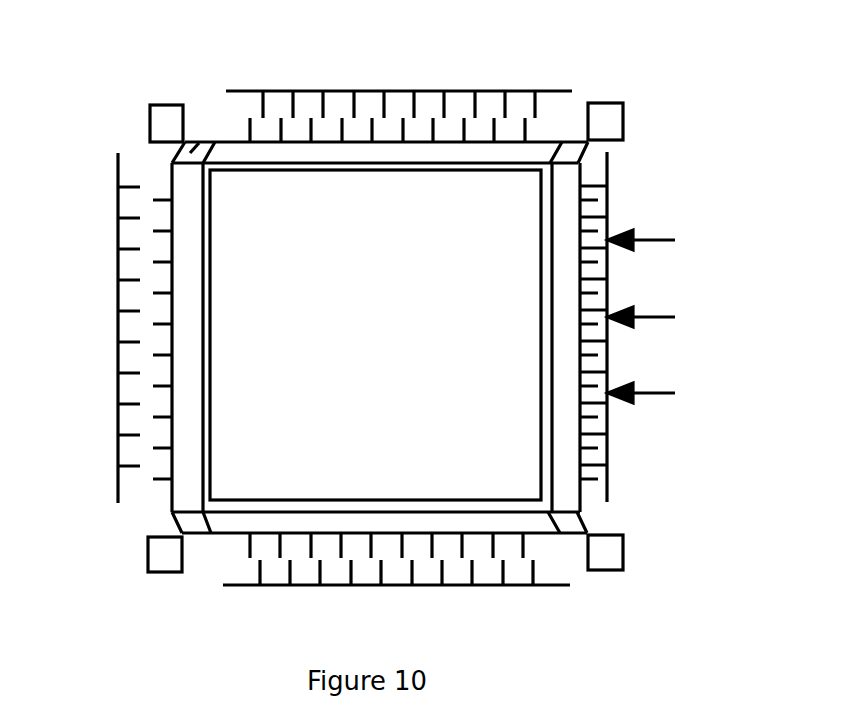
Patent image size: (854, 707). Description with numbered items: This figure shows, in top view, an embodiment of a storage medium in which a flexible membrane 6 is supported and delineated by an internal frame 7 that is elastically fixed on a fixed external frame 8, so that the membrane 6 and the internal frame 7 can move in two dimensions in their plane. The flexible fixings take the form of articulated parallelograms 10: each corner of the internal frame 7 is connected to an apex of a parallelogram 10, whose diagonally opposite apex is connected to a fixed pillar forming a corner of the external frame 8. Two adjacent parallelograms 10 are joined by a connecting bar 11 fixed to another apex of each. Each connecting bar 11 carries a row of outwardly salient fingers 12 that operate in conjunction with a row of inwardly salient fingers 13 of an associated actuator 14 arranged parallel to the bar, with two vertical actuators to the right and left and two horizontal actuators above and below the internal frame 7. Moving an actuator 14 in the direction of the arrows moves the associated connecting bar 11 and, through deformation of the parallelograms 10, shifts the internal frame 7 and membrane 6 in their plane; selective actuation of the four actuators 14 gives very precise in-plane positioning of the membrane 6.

The flexible membrane 6 is at (468, 240).
The internal frame 7 is at (547, 487).
The external frame 8 is at (603, 120).
The articulated parallelogram 10 is at (192, 136).
The connecting bar 11 is at (170, 493).
The outwardly salient fingers 12 is at (168, 198).
The inwardly salient fingers 13 is at (138, 312).
The actuator 14 is at (118, 437).